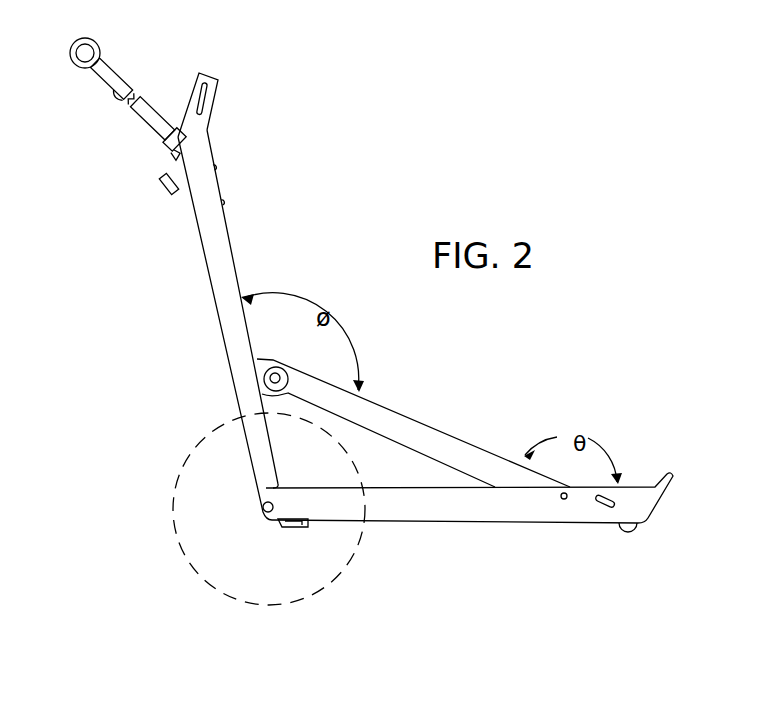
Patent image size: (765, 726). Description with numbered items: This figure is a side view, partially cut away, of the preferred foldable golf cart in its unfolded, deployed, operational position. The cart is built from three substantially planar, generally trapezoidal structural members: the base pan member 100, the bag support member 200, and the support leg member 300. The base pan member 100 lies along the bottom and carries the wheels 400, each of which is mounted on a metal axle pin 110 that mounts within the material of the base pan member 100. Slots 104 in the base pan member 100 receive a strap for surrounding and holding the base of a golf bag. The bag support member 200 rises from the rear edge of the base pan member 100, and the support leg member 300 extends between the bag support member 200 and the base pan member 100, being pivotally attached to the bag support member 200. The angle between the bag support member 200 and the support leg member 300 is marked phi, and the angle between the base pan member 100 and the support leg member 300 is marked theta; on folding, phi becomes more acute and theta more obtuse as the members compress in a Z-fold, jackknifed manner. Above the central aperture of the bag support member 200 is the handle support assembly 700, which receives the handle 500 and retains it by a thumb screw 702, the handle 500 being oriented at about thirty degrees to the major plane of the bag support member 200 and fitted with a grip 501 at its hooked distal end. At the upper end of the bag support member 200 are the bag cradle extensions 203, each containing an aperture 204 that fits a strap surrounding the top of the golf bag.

The base pan member 100 is at (633, 493).
The slots 104 is at (603, 507).
The axle pin 110 is at (262, 518).
The bag support member 200 is at (247, 282).
The bag cradle extensions 203 is at (216, 82).
The aperture 204 is at (210, 107).
The support leg member 300 is at (457, 438).
The wheels 400 is at (200, 443).
The handle 500 is at (152, 120).
The grip 501 is at (90, 50).
The handle support assembly 700 is at (158, 162).
The thumb screw 702 is at (165, 187).